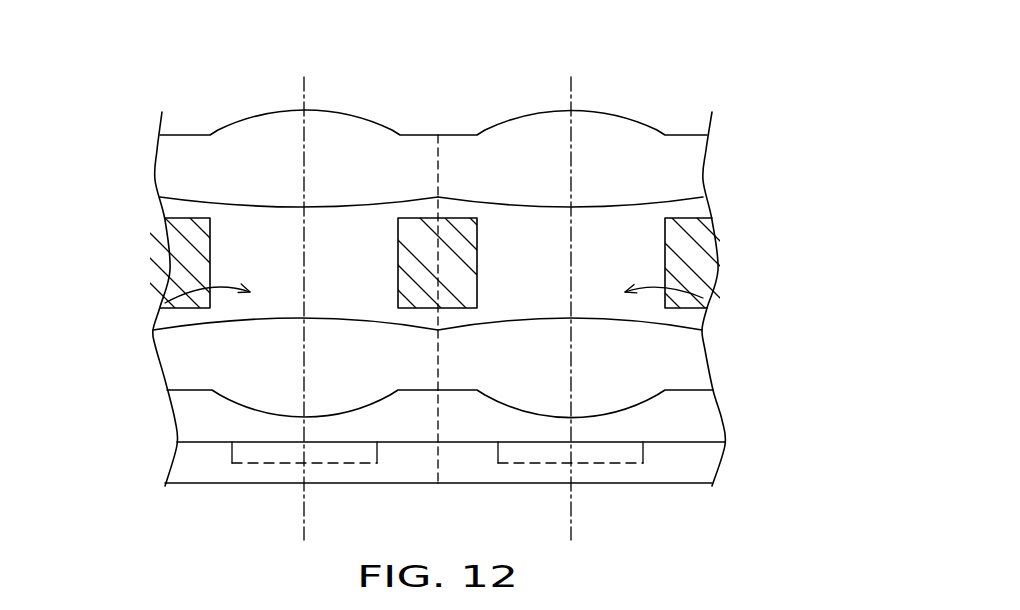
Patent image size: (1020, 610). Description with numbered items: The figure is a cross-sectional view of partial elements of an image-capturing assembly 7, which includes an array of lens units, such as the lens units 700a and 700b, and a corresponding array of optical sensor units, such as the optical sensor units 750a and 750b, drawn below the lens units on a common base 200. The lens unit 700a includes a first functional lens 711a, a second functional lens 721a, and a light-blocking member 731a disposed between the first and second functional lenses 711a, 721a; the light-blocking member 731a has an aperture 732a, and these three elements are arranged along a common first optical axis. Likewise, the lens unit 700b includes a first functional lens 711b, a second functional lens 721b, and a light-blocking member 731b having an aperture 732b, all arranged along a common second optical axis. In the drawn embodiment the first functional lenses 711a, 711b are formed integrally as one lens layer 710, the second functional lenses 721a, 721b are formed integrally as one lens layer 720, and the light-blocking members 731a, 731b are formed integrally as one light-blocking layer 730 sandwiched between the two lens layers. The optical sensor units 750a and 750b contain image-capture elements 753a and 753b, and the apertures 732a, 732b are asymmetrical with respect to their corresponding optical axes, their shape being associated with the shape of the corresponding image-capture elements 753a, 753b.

The image-capturing assembly 7 is at (740, 97).
The lens unit 700a is at (630, 92).
The lens unit 700b is at (247, 90).
The lens layer 710 is at (707, 153).
The lens layer 720 is at (708, 348).
The second functional lens 721a is at (693, 182).
The second functional lens 721b is at (180, 182).
The first functional lens 711a is at (697, 377).
The first functional lens 711b is at (177, 375).
The light-blocking layer 730 is at (720, 241).
The light-blocking member 731a is at (713, 272).
The light-blocking member 731b is at (177, 272).
The aperture 732a is at (705, 300).
The aperture 732b is at (168, 297).
The substrate 200 is at (160, 457).
The optical sensor unit 750a is at (683, 490).
The optical sensor unit 750b is at (195, 488).
The image-capture element 753a is at (623, 456).
The image-capture element 753b is at (253, 456).